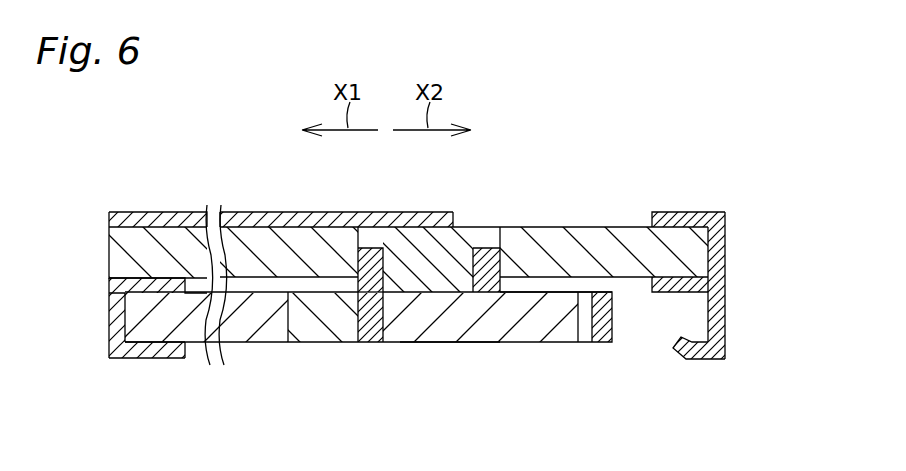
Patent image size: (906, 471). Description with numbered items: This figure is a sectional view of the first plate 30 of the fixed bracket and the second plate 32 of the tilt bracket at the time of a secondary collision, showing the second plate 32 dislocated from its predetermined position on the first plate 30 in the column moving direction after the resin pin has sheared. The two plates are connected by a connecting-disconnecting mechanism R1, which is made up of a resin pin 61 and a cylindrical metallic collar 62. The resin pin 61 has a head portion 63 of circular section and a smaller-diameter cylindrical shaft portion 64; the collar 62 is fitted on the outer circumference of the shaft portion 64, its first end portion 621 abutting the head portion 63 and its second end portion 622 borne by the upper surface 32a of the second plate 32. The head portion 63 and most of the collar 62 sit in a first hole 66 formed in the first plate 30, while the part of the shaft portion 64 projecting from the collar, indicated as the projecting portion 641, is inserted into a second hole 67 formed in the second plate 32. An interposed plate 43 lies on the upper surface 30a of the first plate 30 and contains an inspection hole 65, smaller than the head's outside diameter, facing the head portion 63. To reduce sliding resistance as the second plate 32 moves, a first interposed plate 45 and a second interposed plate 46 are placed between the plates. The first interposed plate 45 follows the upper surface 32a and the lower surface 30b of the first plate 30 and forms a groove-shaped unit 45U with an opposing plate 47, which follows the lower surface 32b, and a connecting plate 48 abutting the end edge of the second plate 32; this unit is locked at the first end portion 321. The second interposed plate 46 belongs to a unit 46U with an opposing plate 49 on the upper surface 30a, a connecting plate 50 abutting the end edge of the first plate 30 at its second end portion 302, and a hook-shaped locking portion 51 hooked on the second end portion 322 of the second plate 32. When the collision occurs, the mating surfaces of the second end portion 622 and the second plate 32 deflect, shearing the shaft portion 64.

The first plate 30 is at (166, 227).
The upper surface of the first plate 30a is at (596, 226).
The lower surface of the first plate 30b is at (214, 362).
The second plate 32 is at (559, 356).
The upper surface of the second plate 32a is at (160, 300).
The lower surface of the second plate 32b is at (150, 356).
The first end portion 321 is at (124, 341).
The second end portion 322 is at (605, 319).
The interposed plate 43 is at (292, 226).
The first interposed plate 45 is at (127, 243).
The groove-shaped unit 45U is at (94, 298).
The second interposed plate 46 is at (666, 290).
The unit 46U is at (740, 223).
The opposing plate 47 is at (173, 358).
The connecting plate 48 is at (122, 318).
The opposing plate 49 is at (688, 220).
The connecting plate 50 is at (718, 242).
The locking portion 51 is at (706, 360).
The resin pin 61 is at (326, 357).
The cylindrical metallic collar 62 is at (494, 258).
The first end portion of the metallic collar 621 is at (376, 262).
The second end portion of the metallic collar 622 is at (360, 332).
The head portion 63 is at (482, 240).
The shaft portion 64 is at (456, 283).
The partition of middle block 641 is at (292, 345).
The inspection hole 65 is at (248, 224).
The first hole 66 is at (356, 262).
The second hole 67 is at (368, 332).
The second end portion 302 is at (700, 270).
The connecting-disconnecting mechanism R1 is at (447, 361).